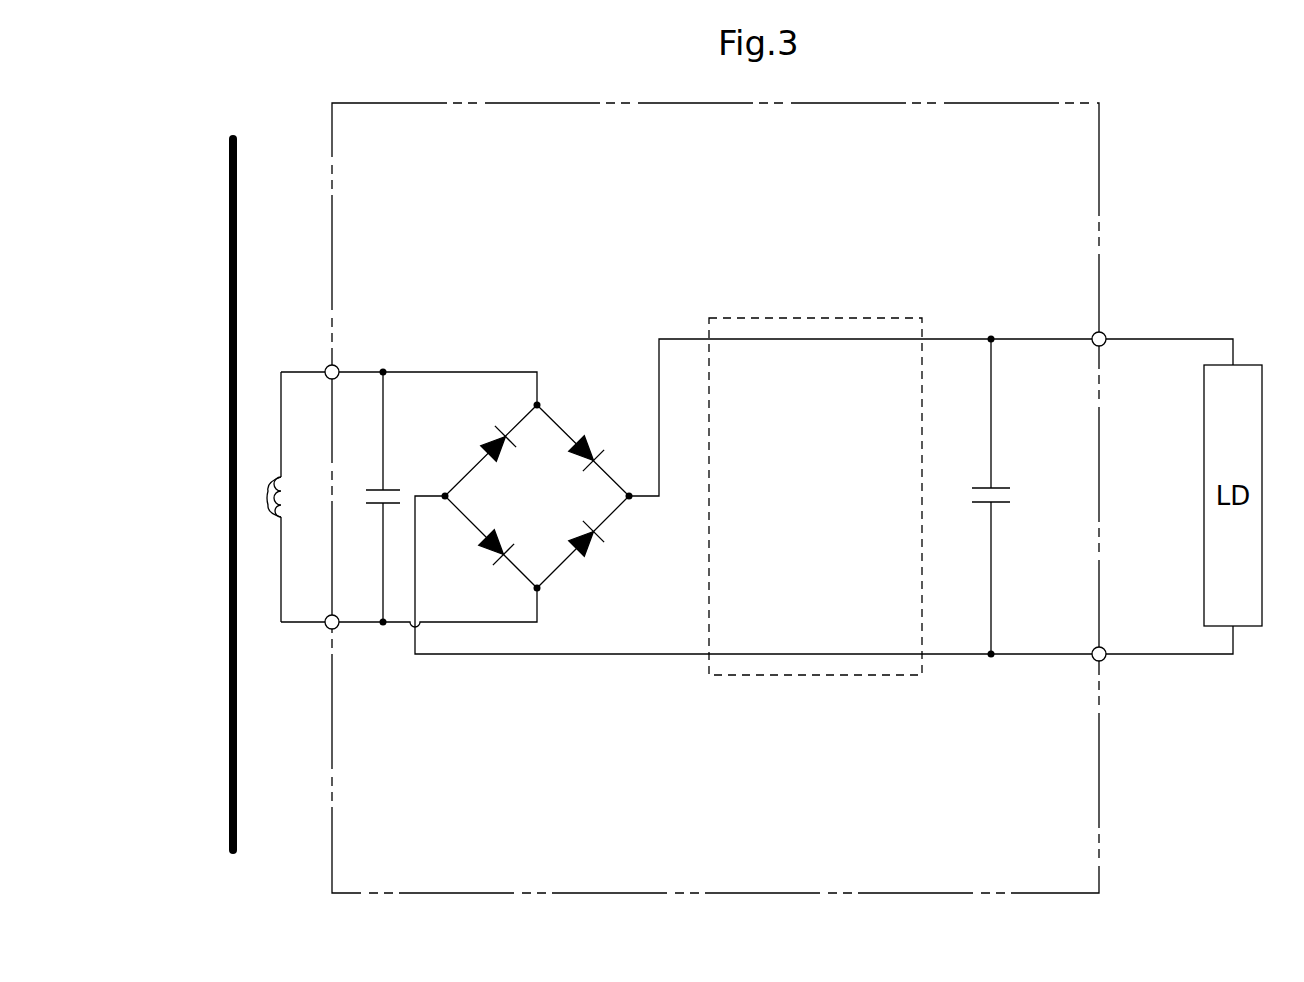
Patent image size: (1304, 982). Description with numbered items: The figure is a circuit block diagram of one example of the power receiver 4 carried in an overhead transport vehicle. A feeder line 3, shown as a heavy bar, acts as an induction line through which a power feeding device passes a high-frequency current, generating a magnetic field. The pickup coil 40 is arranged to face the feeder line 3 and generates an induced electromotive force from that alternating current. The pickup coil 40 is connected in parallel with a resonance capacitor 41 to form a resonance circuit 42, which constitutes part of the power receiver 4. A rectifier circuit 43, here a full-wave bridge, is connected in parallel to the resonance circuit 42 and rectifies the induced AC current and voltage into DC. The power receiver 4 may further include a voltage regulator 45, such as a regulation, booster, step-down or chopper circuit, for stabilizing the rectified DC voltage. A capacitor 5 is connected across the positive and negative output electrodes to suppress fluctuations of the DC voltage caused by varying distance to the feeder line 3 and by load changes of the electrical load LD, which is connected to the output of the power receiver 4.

The feeder line 3 is at (229, 250).
The power receiver 4 is at (1135, 103).
The capacitor 5 is at (1022, 490).
The pickup coil 40 is at (272, 481).
The resonance capacitor 41 is at (377, 488).
The resonance circuit 42 is at (346, 358).
The rectifier circuit 43 is at (582, 412).
The voltage regulator 45 is at (827, 318).